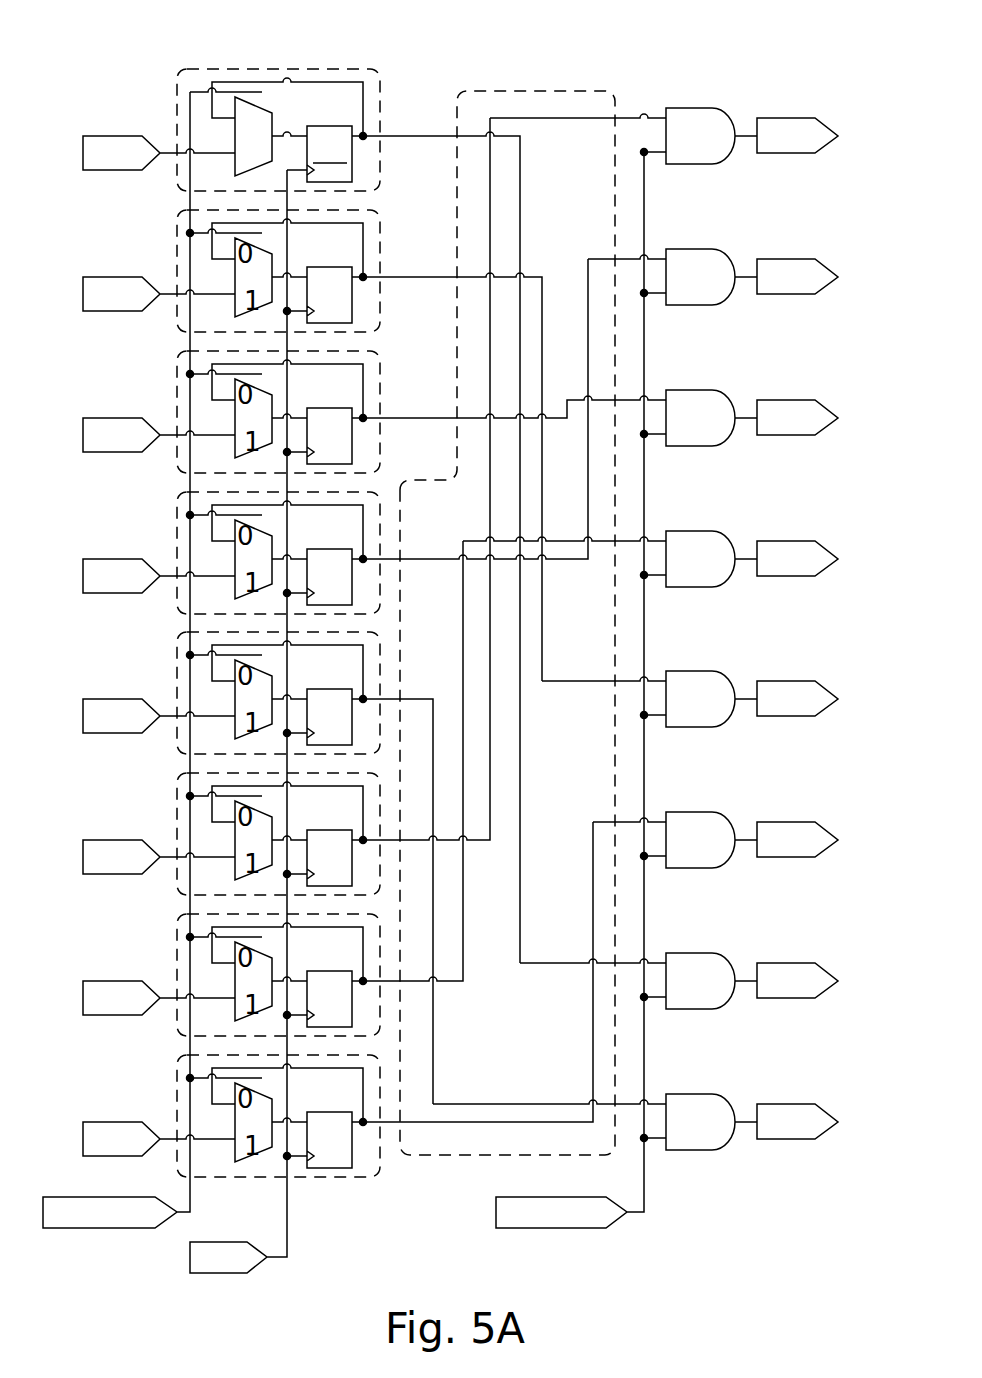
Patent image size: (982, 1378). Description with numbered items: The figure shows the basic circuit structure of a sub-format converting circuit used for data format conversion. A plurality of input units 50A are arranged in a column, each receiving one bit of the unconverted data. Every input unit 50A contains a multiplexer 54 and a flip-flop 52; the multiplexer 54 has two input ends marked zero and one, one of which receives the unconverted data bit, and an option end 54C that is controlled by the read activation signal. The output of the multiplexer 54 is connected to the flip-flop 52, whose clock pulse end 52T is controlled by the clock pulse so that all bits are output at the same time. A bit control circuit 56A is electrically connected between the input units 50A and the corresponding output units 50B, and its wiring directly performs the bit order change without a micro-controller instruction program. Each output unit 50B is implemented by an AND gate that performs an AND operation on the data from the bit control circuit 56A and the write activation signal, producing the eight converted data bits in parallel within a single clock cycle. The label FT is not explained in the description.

The input unit 50A is at (245, 649).
The multiplexer 54 is at (269, 115).
The option end 54C is at (268, 96).
The flip-flop 52 is at (289, 130).
The clock pulse end 52T is at (326, 170).
The bit control circuit 56A is at (543, 91).
The feedthrough permutation FT is at (514, 577).
The output unit 50B is at (675, 108).